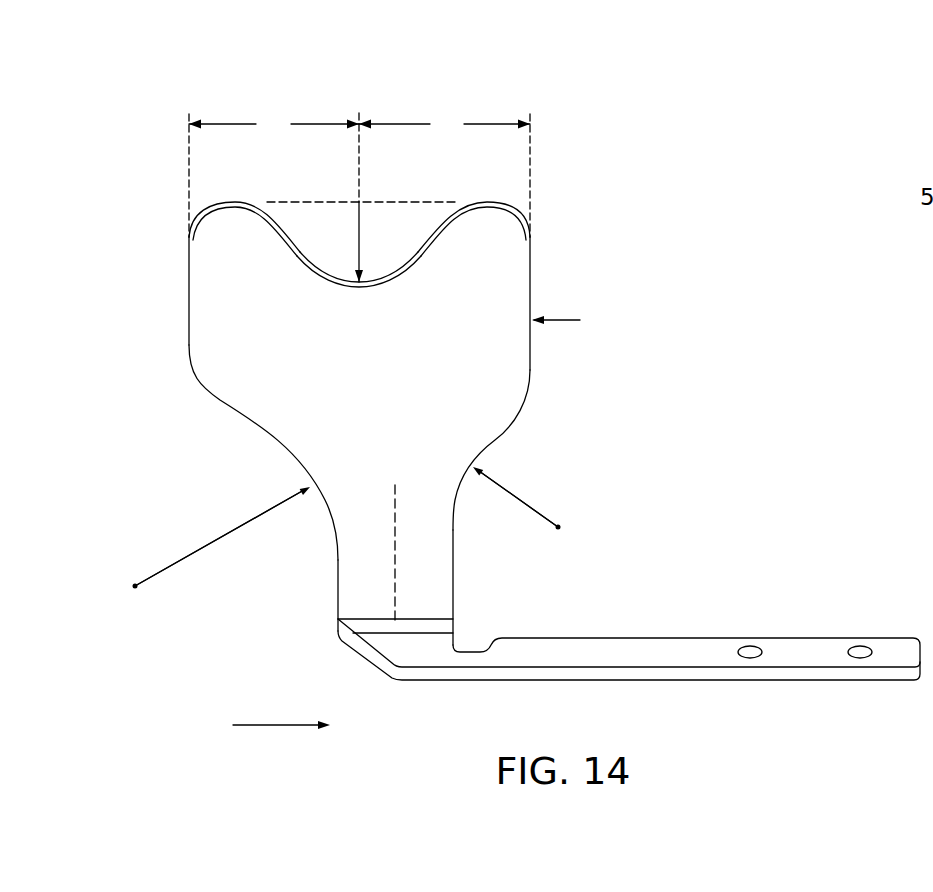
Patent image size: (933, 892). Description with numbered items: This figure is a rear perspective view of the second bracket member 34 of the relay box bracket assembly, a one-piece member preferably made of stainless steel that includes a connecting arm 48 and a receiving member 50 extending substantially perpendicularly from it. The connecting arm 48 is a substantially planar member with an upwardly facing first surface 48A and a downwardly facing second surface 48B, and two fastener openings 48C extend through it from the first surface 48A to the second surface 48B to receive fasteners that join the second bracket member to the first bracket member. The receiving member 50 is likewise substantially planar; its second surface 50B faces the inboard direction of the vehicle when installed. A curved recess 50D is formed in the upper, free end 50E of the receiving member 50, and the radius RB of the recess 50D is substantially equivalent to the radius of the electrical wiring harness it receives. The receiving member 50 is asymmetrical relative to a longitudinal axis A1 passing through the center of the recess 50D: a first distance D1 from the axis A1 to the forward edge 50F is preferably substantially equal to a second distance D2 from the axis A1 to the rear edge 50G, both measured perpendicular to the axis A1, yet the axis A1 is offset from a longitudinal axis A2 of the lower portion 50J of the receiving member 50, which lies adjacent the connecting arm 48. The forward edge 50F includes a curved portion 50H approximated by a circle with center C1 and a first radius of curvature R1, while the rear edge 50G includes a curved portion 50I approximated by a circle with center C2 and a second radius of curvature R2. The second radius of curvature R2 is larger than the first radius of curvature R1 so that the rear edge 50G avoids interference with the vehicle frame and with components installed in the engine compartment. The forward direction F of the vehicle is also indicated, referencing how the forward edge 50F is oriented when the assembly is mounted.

The receiving member 50 is at (530, 358).
The second surface 50B is at (492, 393).
The recess 50D is at (292, 261).
The upper end 50E is at (483, 200).
The forward edge 50F is at (530, 280).
The rear edge 50G is at (189, 289).
The curved portion of the forward edge 50H is at (460, 490).
The curved portion of the rear edge 50I is at (262, 430).
The lower portion 50J is at (410, 425).
The second bracket member 34 is at (572, 321).
The connecting arm 48 is at (710, 638).
The first surface 48A is at (632, 653).
The second surface 48B is at (727, 680).
The fastener opening 48C is at (862, 645).
The first distance D1 is at (444, 174).
The second distance D2 is at (274, 174).
The longitudinal axis A1 is at (359, 172).
The longitudinal axis of the lower portion A2 is at (395, 523).
The radius RB is at (362, 233).
The first radius of curvature R1 is at (517, 493).
The second radius of curvature R2 is at (225, 537).
The center C1 is at (558, 530).
The center C2 is at (135, 590).
The forward direction F is at (273, 725).